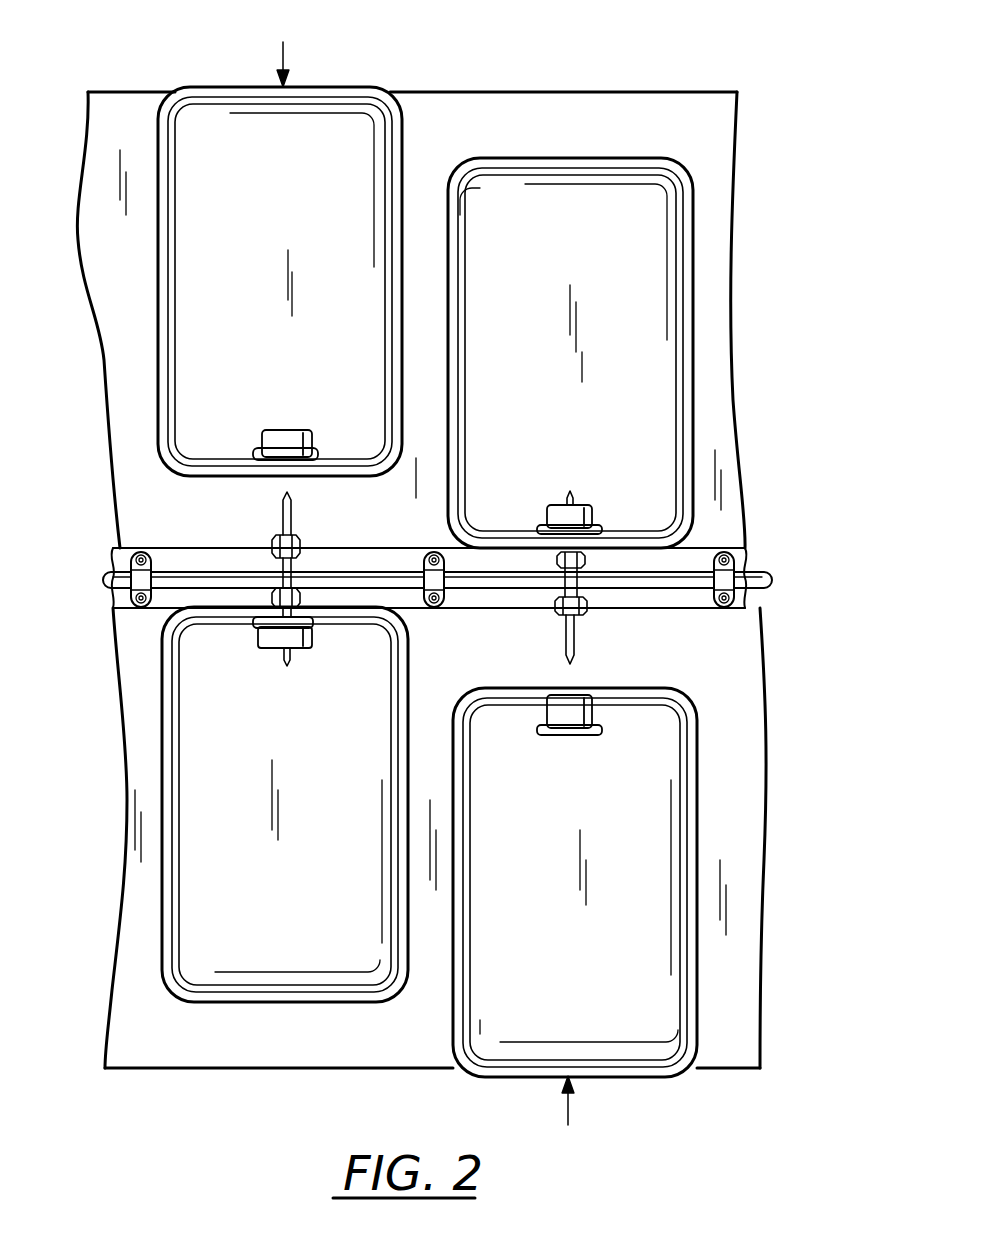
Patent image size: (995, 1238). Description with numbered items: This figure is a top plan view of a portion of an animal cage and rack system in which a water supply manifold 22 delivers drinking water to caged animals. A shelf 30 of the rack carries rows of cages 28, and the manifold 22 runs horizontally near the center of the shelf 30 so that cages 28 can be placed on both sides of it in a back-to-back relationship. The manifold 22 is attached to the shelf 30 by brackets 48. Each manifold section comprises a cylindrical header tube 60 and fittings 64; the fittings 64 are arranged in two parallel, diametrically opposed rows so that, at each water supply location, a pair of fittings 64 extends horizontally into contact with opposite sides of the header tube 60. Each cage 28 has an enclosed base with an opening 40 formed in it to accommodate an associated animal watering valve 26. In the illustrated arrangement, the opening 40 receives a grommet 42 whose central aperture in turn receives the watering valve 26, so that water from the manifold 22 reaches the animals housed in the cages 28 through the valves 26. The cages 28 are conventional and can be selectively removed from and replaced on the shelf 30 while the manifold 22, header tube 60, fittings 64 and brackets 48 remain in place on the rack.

The water supply manifold 22 is at (768, 569).
The animal watering valve 26 is at (282, 507).
The cage 28 is at (373, 86).
The shelf 30 is at (752, 768).
The opening 40 is at (258, 457).
The grommet 42 is at (307, 435).
The bracket 48 is at (745, 550).
The header tube 60 is at (170, 566).
The fitting 64 is at (307, 603).